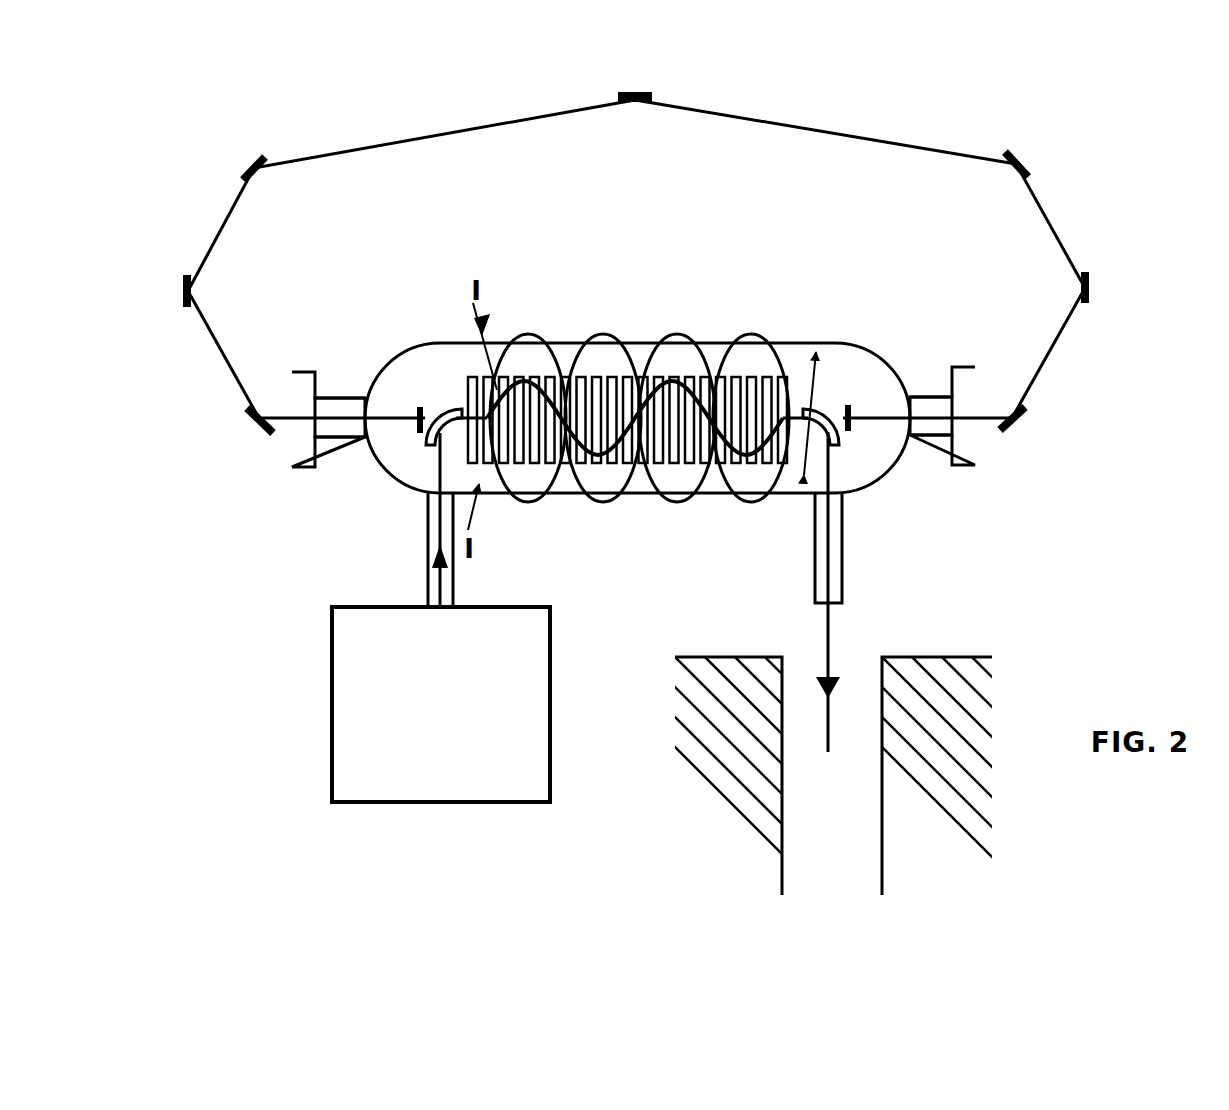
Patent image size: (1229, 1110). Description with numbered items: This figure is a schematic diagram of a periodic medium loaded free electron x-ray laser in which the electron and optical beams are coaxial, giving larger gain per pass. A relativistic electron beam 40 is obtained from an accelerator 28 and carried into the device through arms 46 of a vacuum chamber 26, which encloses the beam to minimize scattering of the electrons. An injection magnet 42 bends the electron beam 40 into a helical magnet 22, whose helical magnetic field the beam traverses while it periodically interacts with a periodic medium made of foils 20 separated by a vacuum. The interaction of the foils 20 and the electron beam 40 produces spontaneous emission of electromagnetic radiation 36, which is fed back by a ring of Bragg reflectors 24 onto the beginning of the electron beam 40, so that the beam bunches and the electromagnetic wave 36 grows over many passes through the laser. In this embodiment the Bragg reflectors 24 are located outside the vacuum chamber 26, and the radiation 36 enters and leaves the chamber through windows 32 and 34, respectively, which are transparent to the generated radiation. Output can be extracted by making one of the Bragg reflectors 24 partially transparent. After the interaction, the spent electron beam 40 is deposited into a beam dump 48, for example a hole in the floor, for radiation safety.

The foils 20 is at (569, 372).
The helical magnet 22 is at (749, 336).
The Bragg reflectors 24 is at (641, 251).
The vacuum chamber 26 is at (890, 486).
The accelerator 28 is at (332, 731).
The window 32 is at (305, 368).
The window 34 is at (957, 364).
The electromagnetic radiation 36 is at (348, 424).
The electron beam 40 is at (434, 573).
The injection magnet 42 is at (443, 401).
The arms 46 is at (457, 578).
The beam dump 48 is at (927, 654).